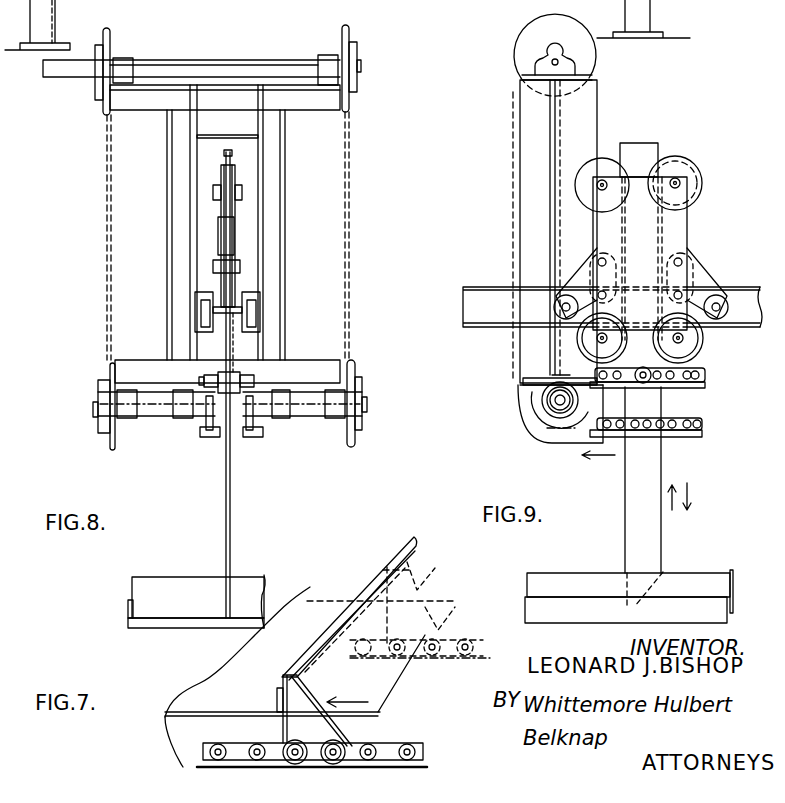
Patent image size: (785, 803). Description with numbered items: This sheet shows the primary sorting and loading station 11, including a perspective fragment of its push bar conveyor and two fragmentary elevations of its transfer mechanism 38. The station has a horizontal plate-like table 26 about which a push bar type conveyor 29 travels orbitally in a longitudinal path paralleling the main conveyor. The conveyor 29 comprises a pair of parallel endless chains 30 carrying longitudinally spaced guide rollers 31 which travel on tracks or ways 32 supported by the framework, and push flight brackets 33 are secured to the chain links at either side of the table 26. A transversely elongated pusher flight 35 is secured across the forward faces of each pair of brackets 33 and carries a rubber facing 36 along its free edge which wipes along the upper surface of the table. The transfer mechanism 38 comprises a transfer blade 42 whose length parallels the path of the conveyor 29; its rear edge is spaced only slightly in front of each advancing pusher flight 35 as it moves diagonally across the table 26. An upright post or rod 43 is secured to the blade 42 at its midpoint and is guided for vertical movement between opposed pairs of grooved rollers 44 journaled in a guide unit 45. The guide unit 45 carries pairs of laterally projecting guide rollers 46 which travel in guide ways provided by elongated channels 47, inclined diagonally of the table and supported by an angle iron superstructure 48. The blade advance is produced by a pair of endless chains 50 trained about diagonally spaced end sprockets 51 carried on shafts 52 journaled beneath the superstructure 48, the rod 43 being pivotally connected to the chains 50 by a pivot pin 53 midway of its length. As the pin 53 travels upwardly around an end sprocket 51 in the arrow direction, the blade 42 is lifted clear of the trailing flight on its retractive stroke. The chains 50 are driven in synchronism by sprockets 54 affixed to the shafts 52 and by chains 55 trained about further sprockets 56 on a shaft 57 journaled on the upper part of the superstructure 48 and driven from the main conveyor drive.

In FIG. 7, the primary sorting and loading station 11 is at (168, 744).
In FIG. 7, the table 26 is at (323, 613).
In FIG. 7, the push bar type conveyor 29 is at (388, 553).
In FIG. 7, the endless chains 30 is at (450, 650).
In FIG. 7, the guide rollers 31 is at (403, 767).
In FIG. 7, the tracks or ways 32 is at (295, 762).
In FIG. 7, the push flight brackets 33 is at (420, 583).
In FIG. 7, the pusher flight 35 is at (313, 645).
In FIG. 8, the rubber facing 36 is at (155, 625).
In FIG. 7, the rubber facing 36 is at (277, 692).
In FIG. 8, the transfer mechanism 38 is at (96, 276).
In FIG. 9, the transfer mechanism 38 is at (667, 141).
In FIG. 8, the transfer blade 42 is at (187, 578).
In FIG. 9, the transfer blade 42 is at (683, 580).
In FIG. 8, the upright post or rod 43 is at (227, 155).
In FIG. 9, the upright post or rod 43 is at (650, 490).
In FIG. 8, the grooved rollers 44 is at (233, 175).
In FIG. 9, the grooved rollers 44 is at (600, 160).
In FIG. 8, the guide unit 45 is at (218, 237).
In FIG. 9, the guide unit 45 is at (675, 238).
In FIG. 8, the guide rollers 46 is at (253, 305).
In FIG. 9, the guide rollers 46 is at (568, 293).
In FIG. 8, the elongated channels 47 is at (247, 290).
In FIG. 9, the elongated channels 47 is at (490, 318).
In FIG. 8, the angle iron superstructure 48 is at (295, 201).
In FIG. 8, the endless chains 50 is at (212, 437).
In FIG. 9, the endless chains 50 is at (700, 368).
In FIG. 8, the end sprockets 51 is at (253, 393).
In FIG. 9, the end sprockets 51 is at (540, 418).
In FIG. 8, the shafts 52 is at (157, 413).
In FIG. 9, the shafts 52 is at (537, 398).
In FIG. 8, the pivot pin 53 is at (240, 370).
In FIG. 9, the pivot pin 53 is at (658, 388).
In FIG. 8, the sprockets 54 is at (108, 443).
In FIG. 9, the sprockets 54 is at (543, 442).
In FIG. 8, the chains 55 is at (117, 209).
In FIG. 9, the chains 55 is at (513, 145).
In FIG. 8, the sprockets 56 is at (345, 33).
In FIG. 9, the sprockets 56 is at (522, 55).
In FIG. 8, the shaft 57 is at (233, 67).
In FIG. 9, the shaft 57 is at (555, 58).